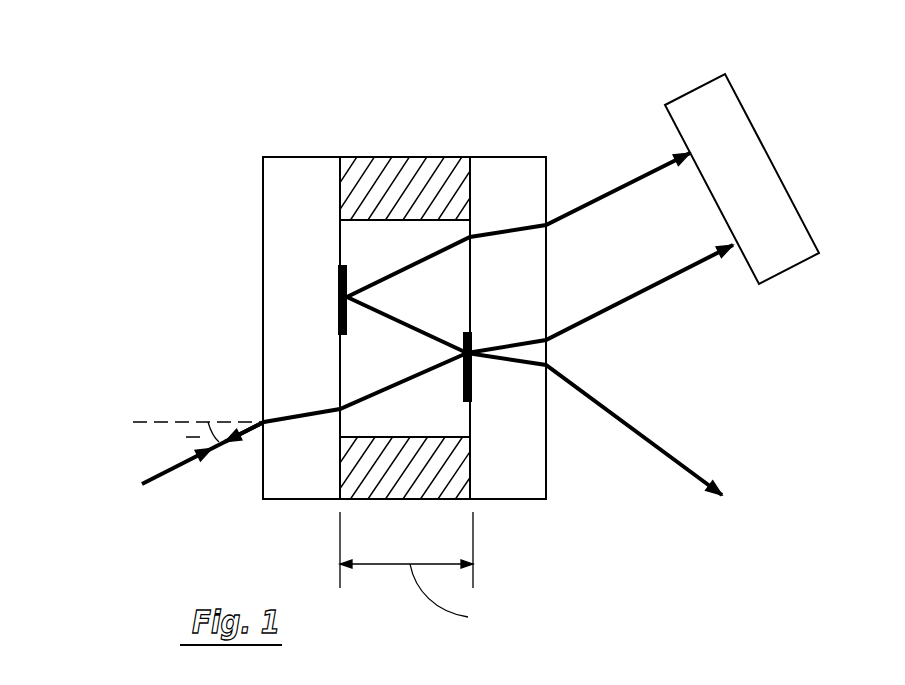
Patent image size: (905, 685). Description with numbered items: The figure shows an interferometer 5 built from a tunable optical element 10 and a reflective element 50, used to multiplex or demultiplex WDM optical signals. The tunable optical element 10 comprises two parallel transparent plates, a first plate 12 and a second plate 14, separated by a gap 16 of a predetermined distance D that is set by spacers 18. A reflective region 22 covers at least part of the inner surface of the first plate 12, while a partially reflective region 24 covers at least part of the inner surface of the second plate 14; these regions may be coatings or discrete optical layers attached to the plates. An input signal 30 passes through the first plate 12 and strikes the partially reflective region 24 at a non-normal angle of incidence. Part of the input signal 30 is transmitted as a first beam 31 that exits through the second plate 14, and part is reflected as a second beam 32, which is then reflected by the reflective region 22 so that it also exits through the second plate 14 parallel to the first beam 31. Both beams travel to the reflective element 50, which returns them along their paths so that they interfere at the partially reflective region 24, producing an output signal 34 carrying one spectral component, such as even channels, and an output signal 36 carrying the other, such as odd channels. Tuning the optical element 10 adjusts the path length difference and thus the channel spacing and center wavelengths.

The interferometer 5 is at (560, 95).
The tunable optical element 10 is at (227, 147).
The first plate 12 is at (295, 175).
The second plate 14 is at (505, 178).
The gap 16 is at (418, 398).
The spacers 18 is at (398, 172).
The reflective region 22 is at (338, 292).
The partially reflective region 24 is at (474, 385).
The input signal 30 is at (162, 476).
The first beam 31 is at (598, 308).
The second beam 32 is at (602, 196).
The output signal 34 is at (627, 422).
The output signal 36 is at (245, 435).
The reflective element 50 is at (755, 190).